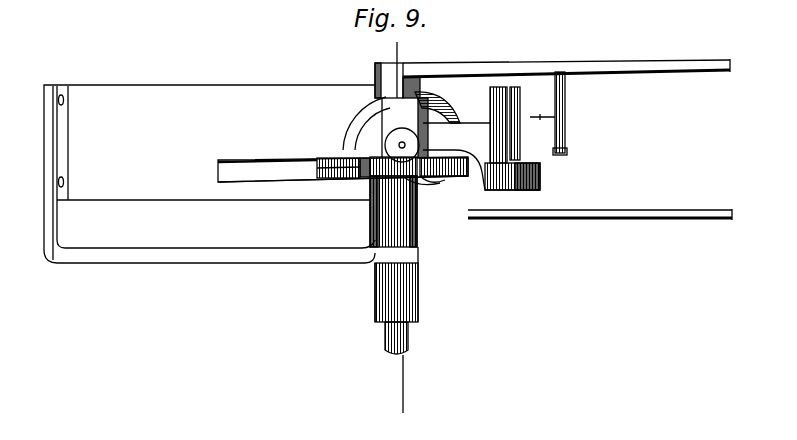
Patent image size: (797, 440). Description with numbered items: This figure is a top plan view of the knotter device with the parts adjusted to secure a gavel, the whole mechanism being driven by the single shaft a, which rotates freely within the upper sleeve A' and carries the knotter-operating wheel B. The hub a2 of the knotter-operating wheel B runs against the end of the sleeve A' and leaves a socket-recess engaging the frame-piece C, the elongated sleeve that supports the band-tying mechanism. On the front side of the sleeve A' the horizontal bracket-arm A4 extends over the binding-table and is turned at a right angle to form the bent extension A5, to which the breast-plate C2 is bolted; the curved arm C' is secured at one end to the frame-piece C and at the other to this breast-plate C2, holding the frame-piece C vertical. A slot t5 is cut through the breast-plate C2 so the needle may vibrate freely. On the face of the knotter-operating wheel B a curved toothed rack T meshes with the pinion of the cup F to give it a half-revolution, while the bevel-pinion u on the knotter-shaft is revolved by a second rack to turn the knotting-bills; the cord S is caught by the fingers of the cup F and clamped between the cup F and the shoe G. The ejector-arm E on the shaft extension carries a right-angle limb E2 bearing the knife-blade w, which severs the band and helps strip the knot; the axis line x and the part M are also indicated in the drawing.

The axis line x is at (398, 227).
The bent extension A5 is at (52, 189).
The horizontal bracket-arm A4 is at (253, 250).
The upper sleeve A' is at (409, 284).
The shaft a is at (408, 333).
The hub a2 is at (393, 202).
The knotter-operating wheel B is at (366, 178).
The cord S is at (340, 180).
The second curved toothed rack T is at (340, 160).
The slot t5 is at (264, 168).
The breast-plate C2 is at (338, 125).
The frame-piece C is at (395, 128).
The curved arm C' is at (479, 144).
The ejector-arm E is at (527, 63).
The limb E2 is at (566, 104).
The knife-blade w is at (542, 110).
The lower rail M is at (600, 225).
The shoe G is at (362, 114).
The bevel-pinion u is at (402, 145).
The cup F is at (425, 184).